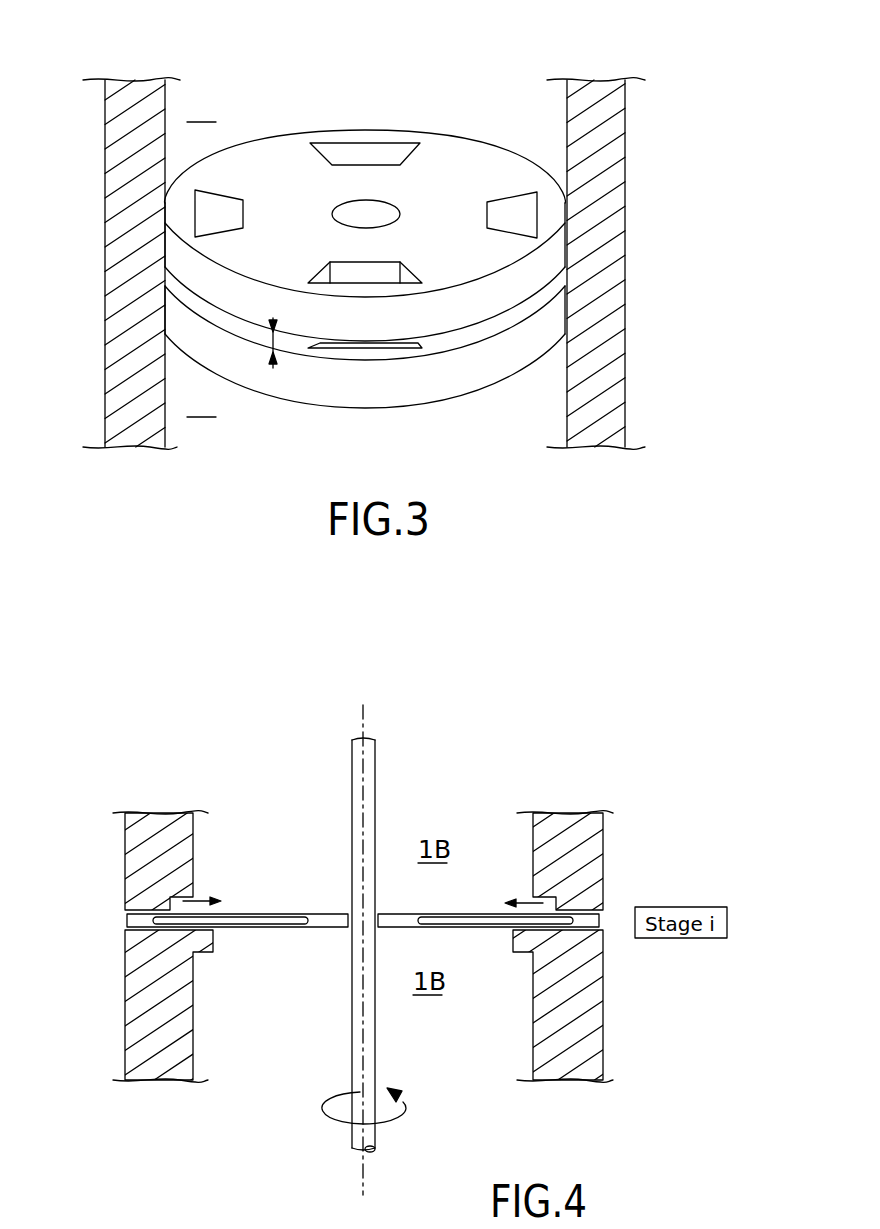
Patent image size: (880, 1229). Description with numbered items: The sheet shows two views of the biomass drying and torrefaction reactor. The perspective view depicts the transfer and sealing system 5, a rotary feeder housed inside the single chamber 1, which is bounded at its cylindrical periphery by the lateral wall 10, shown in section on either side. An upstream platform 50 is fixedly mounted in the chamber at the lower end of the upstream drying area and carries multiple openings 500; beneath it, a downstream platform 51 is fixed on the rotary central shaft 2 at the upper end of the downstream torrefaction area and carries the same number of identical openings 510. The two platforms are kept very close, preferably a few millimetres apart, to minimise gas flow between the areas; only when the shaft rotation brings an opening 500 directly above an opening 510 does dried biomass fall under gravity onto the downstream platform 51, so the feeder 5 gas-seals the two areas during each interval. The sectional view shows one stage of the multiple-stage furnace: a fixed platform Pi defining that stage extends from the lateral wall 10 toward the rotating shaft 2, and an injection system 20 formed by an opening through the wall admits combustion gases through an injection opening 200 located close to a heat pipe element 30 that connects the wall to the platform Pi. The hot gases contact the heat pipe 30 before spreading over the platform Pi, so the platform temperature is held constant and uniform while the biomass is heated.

In FIG. 3, the chamber 1 is at (235, 85).
In FIG. 3, the transfer and sealing system 5 is at (457, 88).
In FIG. 3, the lateral wall 10 is at (622, 110).
In FIG. 4, the lateral wall 10 is at (595, 840).
In FIG. 3, the upstream platform 50 is at (468, 155).
In FIG. 3, the openings 500 is at (343, 152).
In FIG. 3, the downstream platform 51 is at (405, 388).
In FIG. 3, the openings 510 is at (408, 345).
In FIG. 4, the shaft 2 is at (370, 767).
In FIG. 4, the injection system 20 is at (126, 918).
In FIG. 4, the injection opening 200 is at (198, 897).
In FIG. 4, the heat pipe element 30 is at (253, 922).
In FIG. 4, the platform Pi is at (472, 910).